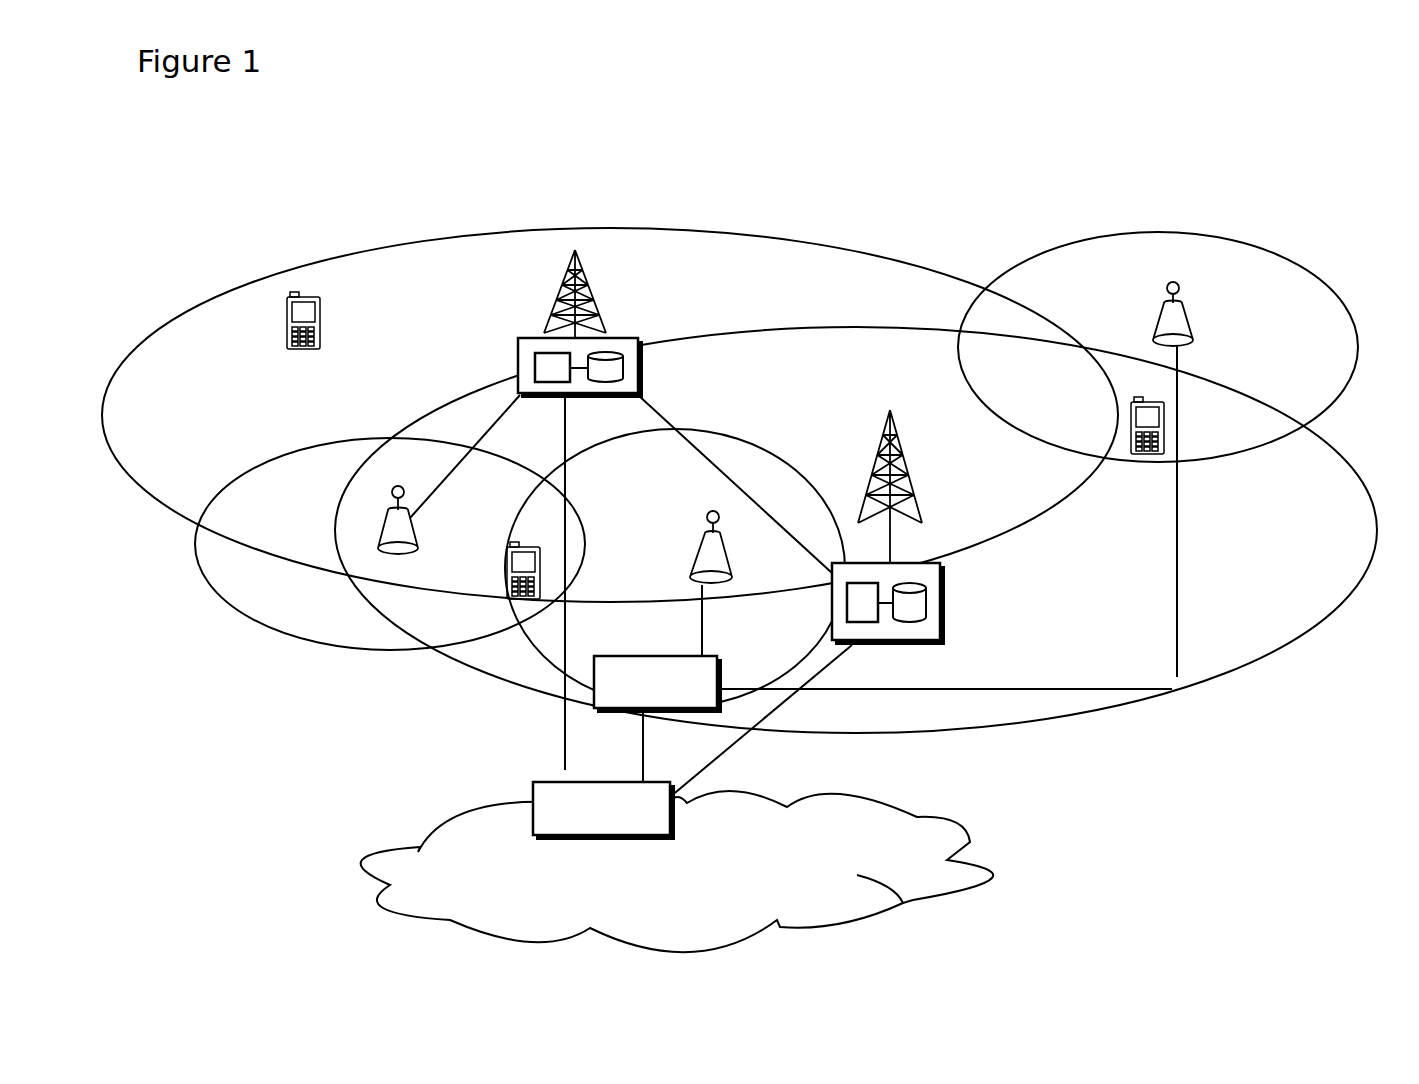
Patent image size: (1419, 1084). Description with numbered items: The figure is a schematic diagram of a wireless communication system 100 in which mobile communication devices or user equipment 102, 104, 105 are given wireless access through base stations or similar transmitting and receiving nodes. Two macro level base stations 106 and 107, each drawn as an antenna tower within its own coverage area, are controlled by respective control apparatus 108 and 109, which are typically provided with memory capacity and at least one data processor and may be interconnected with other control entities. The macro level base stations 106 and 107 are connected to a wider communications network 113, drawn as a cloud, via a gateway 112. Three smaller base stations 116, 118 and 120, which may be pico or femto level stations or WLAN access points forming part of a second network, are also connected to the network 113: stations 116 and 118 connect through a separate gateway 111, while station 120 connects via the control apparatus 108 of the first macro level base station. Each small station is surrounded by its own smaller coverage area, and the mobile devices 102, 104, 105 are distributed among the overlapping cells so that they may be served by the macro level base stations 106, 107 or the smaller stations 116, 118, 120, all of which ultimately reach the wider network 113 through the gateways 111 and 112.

The wireless communication system 100 is at (205, 278).
The mobile communication device 102 is at (285, 337).
The mobile communication device 104 is at (507, 575).
The mobile communication device 105 is at (1147, 457).
The macro level base station 106 is at (560, 300).
The macro level base station 107 is at (917, 488).
The control apparatus 108 is at (518, 352).
The control apparatus 109 is at (930, 628).
The gateway 111 is at (602, 688).
The gateway 112 is at (533, 782).
The wider communications network 113 is at (450, 845).
The smaller base station 116 is at (1155, 318).
The smaller base station 118 is at (710, 566).
The smaller base station 120 is at (385, 525).